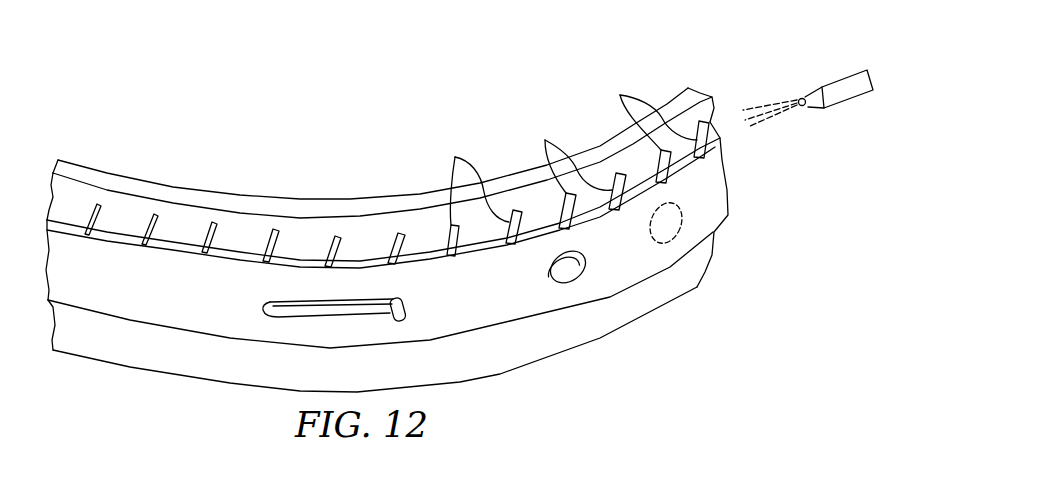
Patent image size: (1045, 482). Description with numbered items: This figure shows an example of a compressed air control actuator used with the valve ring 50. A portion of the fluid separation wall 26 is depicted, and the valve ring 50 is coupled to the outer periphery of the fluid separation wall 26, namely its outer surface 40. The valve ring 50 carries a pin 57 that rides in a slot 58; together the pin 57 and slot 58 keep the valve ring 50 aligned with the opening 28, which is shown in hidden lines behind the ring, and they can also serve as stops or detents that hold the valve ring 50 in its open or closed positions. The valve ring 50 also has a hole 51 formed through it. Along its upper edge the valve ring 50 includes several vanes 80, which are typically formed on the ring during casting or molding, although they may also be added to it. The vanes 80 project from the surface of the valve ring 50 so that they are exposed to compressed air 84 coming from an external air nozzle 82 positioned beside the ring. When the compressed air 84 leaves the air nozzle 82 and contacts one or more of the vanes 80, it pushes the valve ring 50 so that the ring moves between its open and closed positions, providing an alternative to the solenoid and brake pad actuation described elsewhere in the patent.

The fluid separation wall 26 is at (204, 155).
The outer surface 40 is at (313, 207).
The valve ring 50 is at (712, 199).
The vane 80 is at (454, 158).
The hole 51 is at (580, 277).
The opening 28 is at (666, 226).
The slot 58 is at (266, 312).
The pin 57 is at (408, 316).
The external air nozzle 82 is at (852, 70).
The compressed air 84 is at (772, 103).